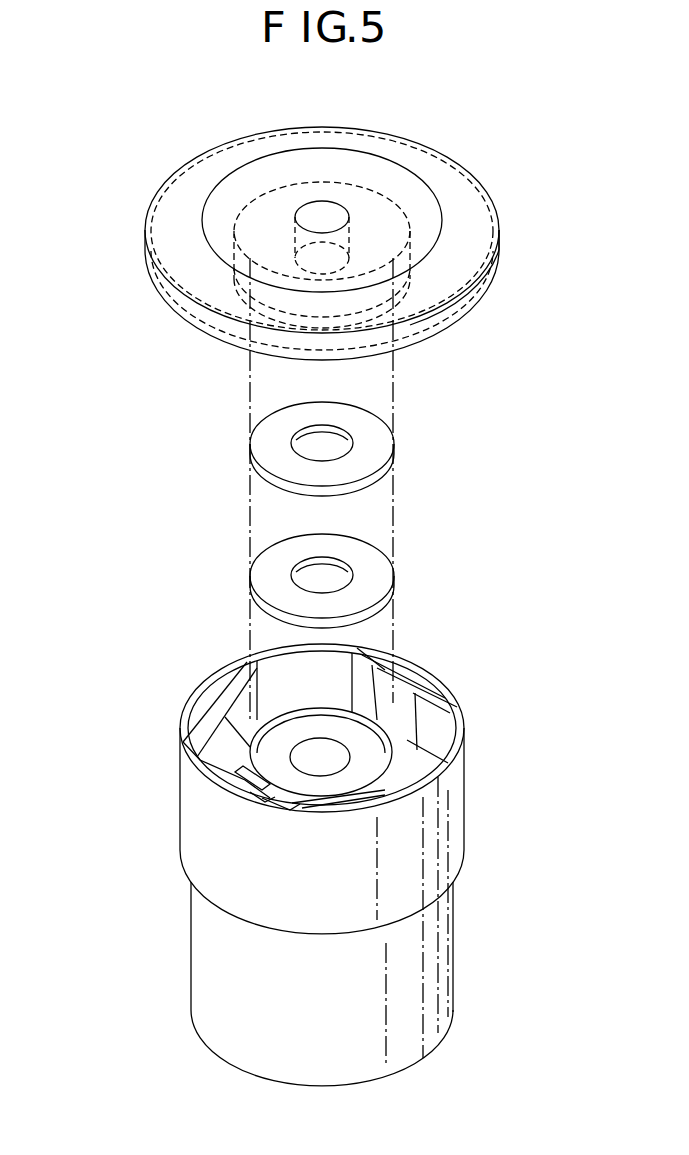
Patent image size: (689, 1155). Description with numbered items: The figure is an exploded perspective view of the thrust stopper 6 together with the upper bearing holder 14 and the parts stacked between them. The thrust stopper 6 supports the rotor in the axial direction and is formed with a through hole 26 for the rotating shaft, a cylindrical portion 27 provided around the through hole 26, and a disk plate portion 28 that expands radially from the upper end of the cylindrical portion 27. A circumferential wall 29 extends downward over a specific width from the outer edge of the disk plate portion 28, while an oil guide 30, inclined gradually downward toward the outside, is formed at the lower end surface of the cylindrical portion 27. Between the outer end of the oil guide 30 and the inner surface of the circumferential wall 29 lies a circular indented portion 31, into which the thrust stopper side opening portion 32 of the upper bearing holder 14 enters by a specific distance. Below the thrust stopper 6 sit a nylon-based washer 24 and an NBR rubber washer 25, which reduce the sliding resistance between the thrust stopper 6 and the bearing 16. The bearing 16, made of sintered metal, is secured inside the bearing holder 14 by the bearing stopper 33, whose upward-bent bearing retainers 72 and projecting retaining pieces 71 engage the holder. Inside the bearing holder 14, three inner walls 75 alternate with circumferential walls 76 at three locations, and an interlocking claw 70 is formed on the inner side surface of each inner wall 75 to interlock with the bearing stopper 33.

The thrust stopper 6 is at (494, 176).
The upper bearing holder 14 is at (435, 858).
The bearing 16 is at (372, 750).
The nylon-based washer 24 is at (258, 573).
The washer 25 is at (258, 446).
The through hole 26 is at (405, 368).
The cylindrical portion 27 is at (428, 347).
The disk plate portion 28 is at (447, 318).
The circumferential wall 29 is at (490, 283).
The oil guide 30 is at (248, 296).
The circular indented portion 31 is at (180, 214).
The thrust stopper side opening portion 32 is at (212, 778).
The bearing stopper 33 is at (255, 802).
The interlocking claw 70 is at (402, 703).
The retaining piece 71 is at (416, 737).
The bearing retainer 72 is at (252, 779).
The inner wall 75 is at (228, 712).
The circumferential wall 76 is at (368, 878).